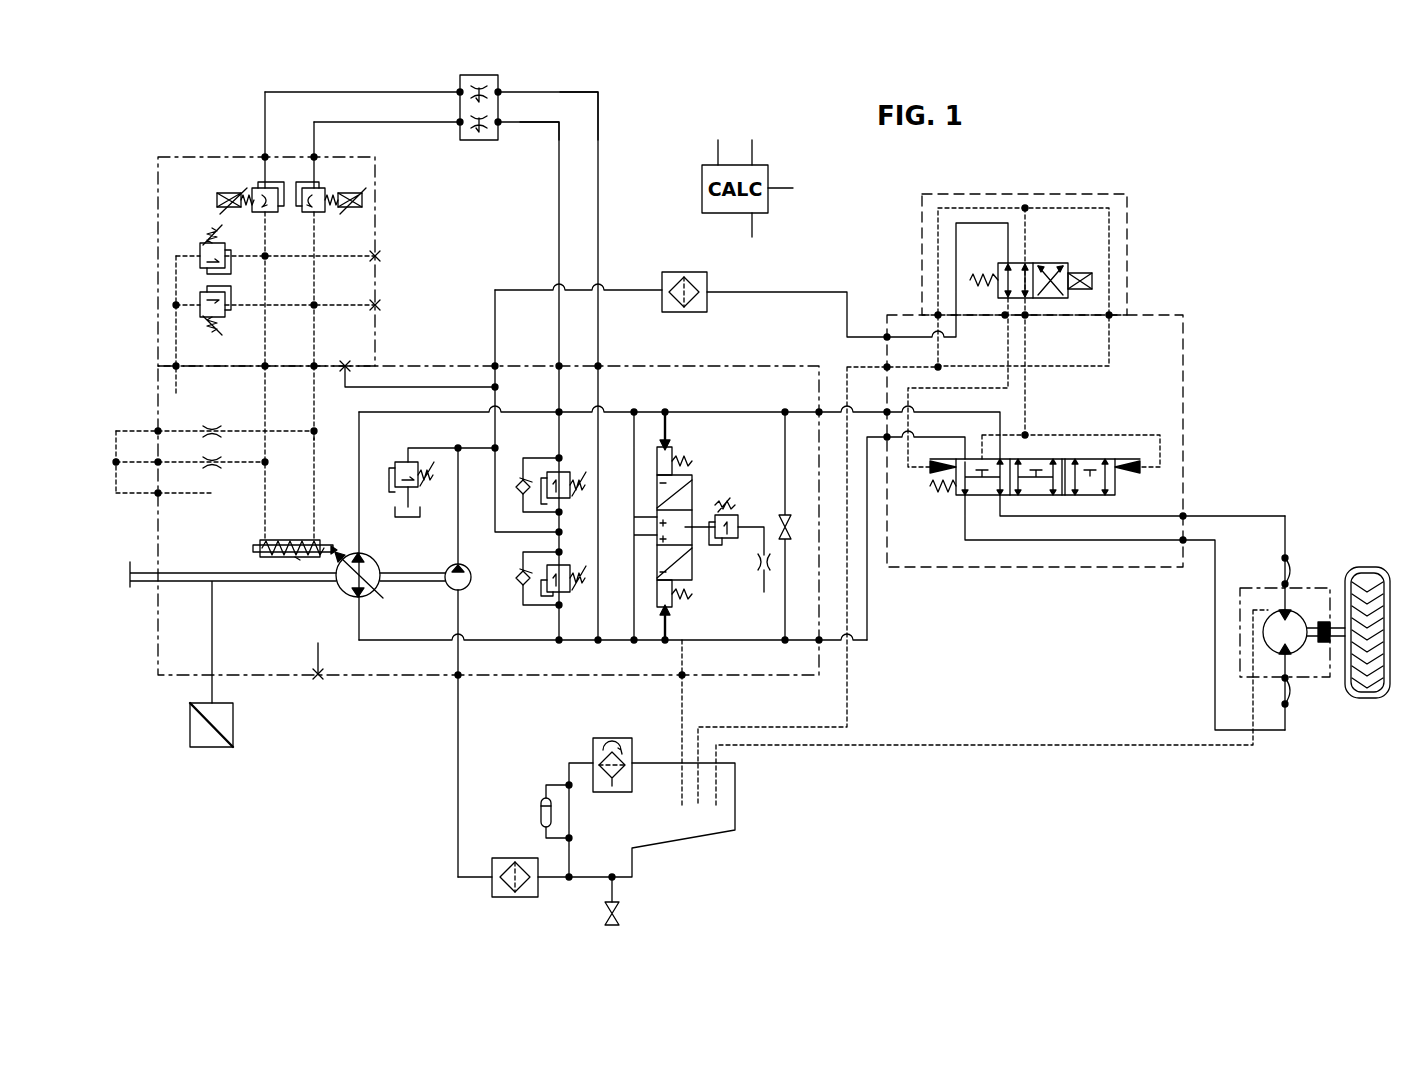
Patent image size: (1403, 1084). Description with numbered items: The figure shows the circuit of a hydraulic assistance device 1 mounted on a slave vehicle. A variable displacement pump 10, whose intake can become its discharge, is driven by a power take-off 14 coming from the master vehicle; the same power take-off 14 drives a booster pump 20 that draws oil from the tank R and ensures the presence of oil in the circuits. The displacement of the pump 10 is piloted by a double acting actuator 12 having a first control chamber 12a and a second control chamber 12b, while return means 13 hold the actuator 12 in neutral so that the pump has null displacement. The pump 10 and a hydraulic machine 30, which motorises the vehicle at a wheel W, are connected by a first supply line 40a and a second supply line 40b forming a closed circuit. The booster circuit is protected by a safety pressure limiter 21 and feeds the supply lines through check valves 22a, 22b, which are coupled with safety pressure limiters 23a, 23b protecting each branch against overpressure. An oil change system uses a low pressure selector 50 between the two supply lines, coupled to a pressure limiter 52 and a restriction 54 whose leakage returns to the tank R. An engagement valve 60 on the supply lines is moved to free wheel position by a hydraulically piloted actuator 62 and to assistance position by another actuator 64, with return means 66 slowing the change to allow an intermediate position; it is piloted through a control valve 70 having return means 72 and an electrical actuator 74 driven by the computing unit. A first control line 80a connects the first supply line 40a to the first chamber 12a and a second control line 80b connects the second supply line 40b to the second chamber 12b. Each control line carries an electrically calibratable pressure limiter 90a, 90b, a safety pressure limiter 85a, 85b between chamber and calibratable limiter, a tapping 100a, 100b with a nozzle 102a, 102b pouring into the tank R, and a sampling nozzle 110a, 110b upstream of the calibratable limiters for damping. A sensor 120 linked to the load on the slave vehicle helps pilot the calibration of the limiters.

The hydraulic assistance device 1 is at (814, 156).
The variable displacement pump 10 is at (338, 592).
The double acting actuator 12 is at (318, 540).
The first control chamber 12a is at (305, 540).
The second control chamber 12b is at (262, 553).
The return means 13 is at (300, 560).
The power take-off 14 is at (232, 584).
The booster pump 20 is at (446, 586).
The safety pressure limiter 21 is at (395, 462).
The check valve 22a is at (520, 480).
The check valve 22b is at (518, 576).
The safety pressure limiter 23a is at (568, 472).
The safety pressure limiter 23b is at (568, 565).
The hydraulic machine 30 is at (1298, 576).
The first supply line 40a is at (748, 410).
The second supply line 40b is at (718, 640).
The low pressure selector 50 is at (699, 482).
The pressure limiter 52 is at (738, 512).
The restriction 54 is at (758, 562).
The engagement valve 60 is at (1097, 422).
The actuator 62 is at (930, 470).
The actuator 64 is at (1140, 470).
The return means 66 is at (941, 490).
The control valve 70 is at (1064, 186).
The return means 72 is at (988, 278).
The electrical actuator 74 is at (779, 186).
The first control line 80a is at (518, 124).
The second control line 80b is at (560, 94).
The safety pressure limiter 85a is at (225, 320).
The safety pressure limiter 85b is at (200, 246).
The electrically calibratable pressure limiter 90a is at (325, 212).
The electrically calibratable pressure limiter 90b is at (252, 190).
The tapping 100a is at (312, 434).
The tapping 100b is at (250, 466).
The nozzle 102a is at (216, 426).
The nozzle 102b is at (210, 470).
The sampling nozzle 110a is at (478, 136).
The sampling nozzle 110b is at (472, 98).
The sensor 120 is at (756, 230).
The wheel W is at (1362, 570).
The tank R is at (655, 820).